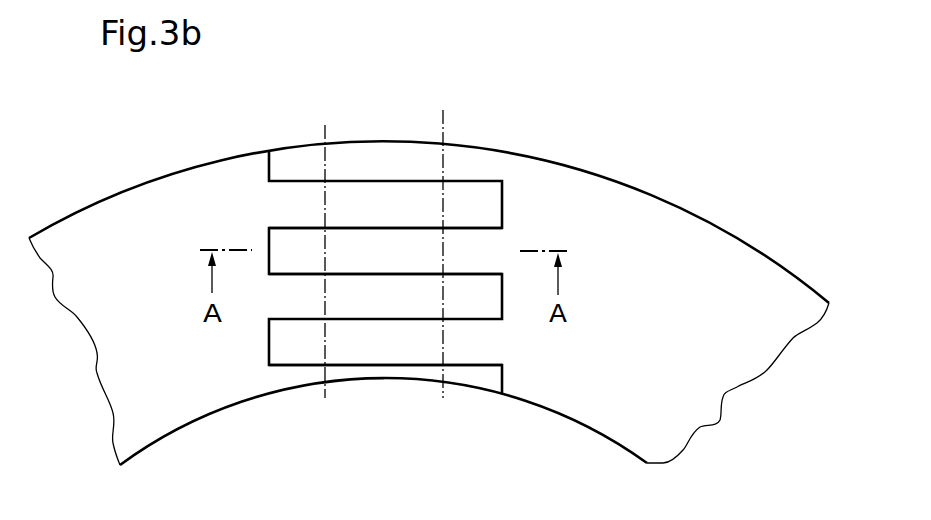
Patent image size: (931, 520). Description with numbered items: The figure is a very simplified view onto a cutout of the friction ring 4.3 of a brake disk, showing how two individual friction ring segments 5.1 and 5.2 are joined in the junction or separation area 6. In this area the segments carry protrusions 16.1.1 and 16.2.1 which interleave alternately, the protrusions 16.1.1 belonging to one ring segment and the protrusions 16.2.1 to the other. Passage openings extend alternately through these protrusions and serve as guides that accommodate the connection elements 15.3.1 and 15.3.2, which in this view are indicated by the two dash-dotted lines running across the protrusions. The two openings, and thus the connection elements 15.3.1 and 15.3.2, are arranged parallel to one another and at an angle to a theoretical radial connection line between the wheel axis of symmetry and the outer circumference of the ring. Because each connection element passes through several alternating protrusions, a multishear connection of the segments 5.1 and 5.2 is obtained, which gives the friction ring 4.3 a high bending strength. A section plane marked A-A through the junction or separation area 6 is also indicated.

The friction ring 4.3 is at (575, 157).
The friction ring segment 5.1 is at (643, 213).
The friction ring segment 5.2 is at (128, 222).
The junction or separation area 6 is at (382, 395).
The connection element 15.3.1 is at (325, 125).
The connection element 15.3.2 is at (443, 112).
The protrusion 16.1.1 is at (385, 272).
The protrusion 16.2.1 is at (453, 427).